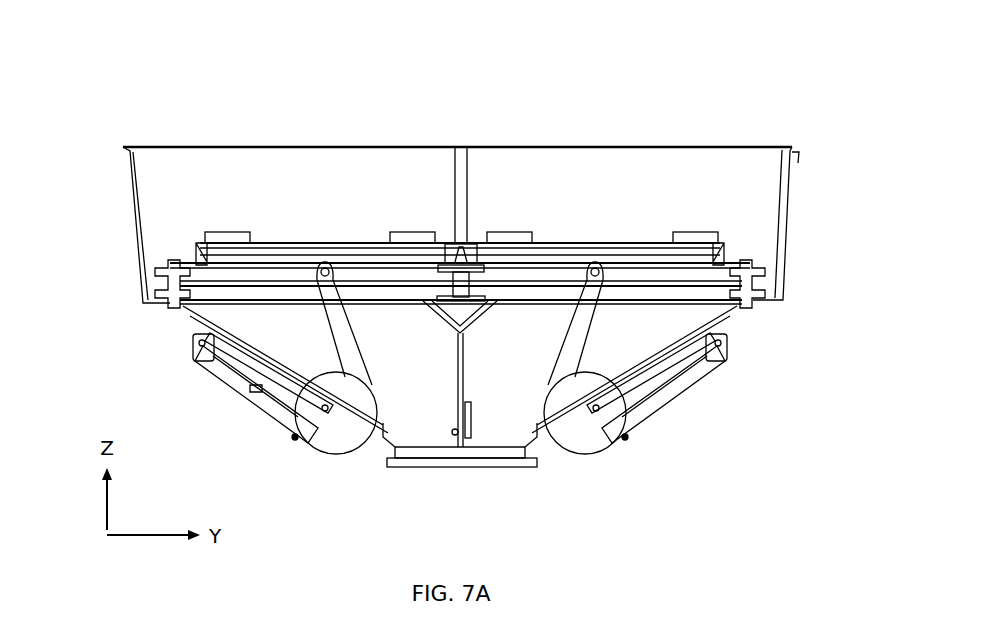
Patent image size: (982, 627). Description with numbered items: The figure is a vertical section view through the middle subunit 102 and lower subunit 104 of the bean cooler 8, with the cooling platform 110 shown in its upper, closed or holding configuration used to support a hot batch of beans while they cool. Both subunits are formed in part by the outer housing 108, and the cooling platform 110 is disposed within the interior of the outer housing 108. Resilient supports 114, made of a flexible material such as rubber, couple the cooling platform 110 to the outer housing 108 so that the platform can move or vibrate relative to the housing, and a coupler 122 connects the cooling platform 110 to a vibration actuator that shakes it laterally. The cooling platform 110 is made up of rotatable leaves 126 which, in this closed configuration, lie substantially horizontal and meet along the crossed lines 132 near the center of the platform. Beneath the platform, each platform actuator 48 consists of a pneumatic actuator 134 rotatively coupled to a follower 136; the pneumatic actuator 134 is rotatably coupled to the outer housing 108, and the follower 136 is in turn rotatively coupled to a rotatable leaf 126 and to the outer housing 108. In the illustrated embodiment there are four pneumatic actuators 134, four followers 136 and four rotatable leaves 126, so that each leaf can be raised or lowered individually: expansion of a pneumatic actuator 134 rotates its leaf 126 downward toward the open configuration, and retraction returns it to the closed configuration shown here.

The bean cooler 8 is at (513, 90).
The platform actuator 48 is at (322, 440).
The middle subunit 102 is at (116, 227).
The lower subunit 104 is at (168, 370).
The outer housing 108 is at (782, 218).
The cooling platform 110 is at (373, 253).
The resilient support 114 is at (750, 283).
The coupler 122 is at (625, 230).
The rotatable leaf 126 is at (300, 250).
The crossed lines 132 is at (463, 247).
The pneumatic actuator 134 is at (237, 385).
The follower 136 is at (340, 442).